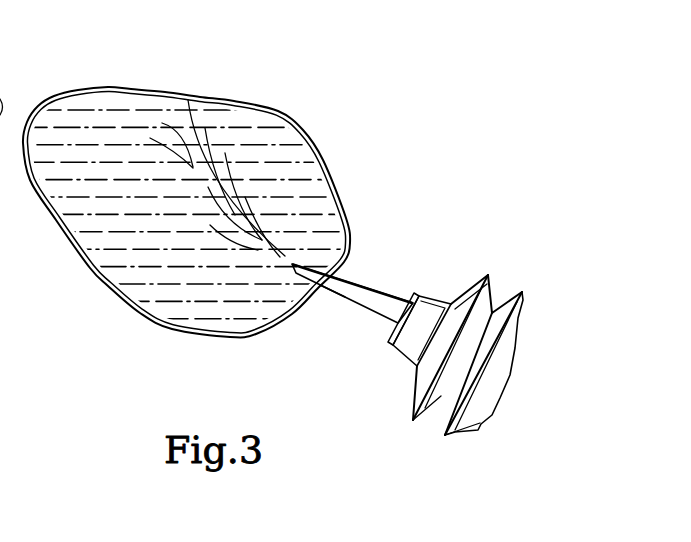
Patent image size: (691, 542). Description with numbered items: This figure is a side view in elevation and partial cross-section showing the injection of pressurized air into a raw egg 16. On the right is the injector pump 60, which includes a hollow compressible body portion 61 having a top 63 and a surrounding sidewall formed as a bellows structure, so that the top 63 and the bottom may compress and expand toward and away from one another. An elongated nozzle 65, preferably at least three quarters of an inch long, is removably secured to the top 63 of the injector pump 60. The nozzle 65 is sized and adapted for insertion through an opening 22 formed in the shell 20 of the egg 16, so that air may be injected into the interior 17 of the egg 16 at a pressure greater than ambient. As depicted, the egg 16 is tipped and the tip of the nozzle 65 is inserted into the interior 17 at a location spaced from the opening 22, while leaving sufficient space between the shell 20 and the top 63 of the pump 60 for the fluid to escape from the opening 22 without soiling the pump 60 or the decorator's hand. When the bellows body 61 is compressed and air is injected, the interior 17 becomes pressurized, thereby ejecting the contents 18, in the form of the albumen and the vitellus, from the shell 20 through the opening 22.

The raw egg 16 is at (284, 108).
The interior 17 is at (147, 130).
The contents 18 is at (138, 250).
The shell 20 is at (322, 161).
The opening 22 is at (333, 293).
The injector pump 60 is at (437, 319).
The hollow compressible body portion 61 is at (443, 402).
The top 63 is at (460, 296).
The elongated nozzle 65 is at (366, 288).